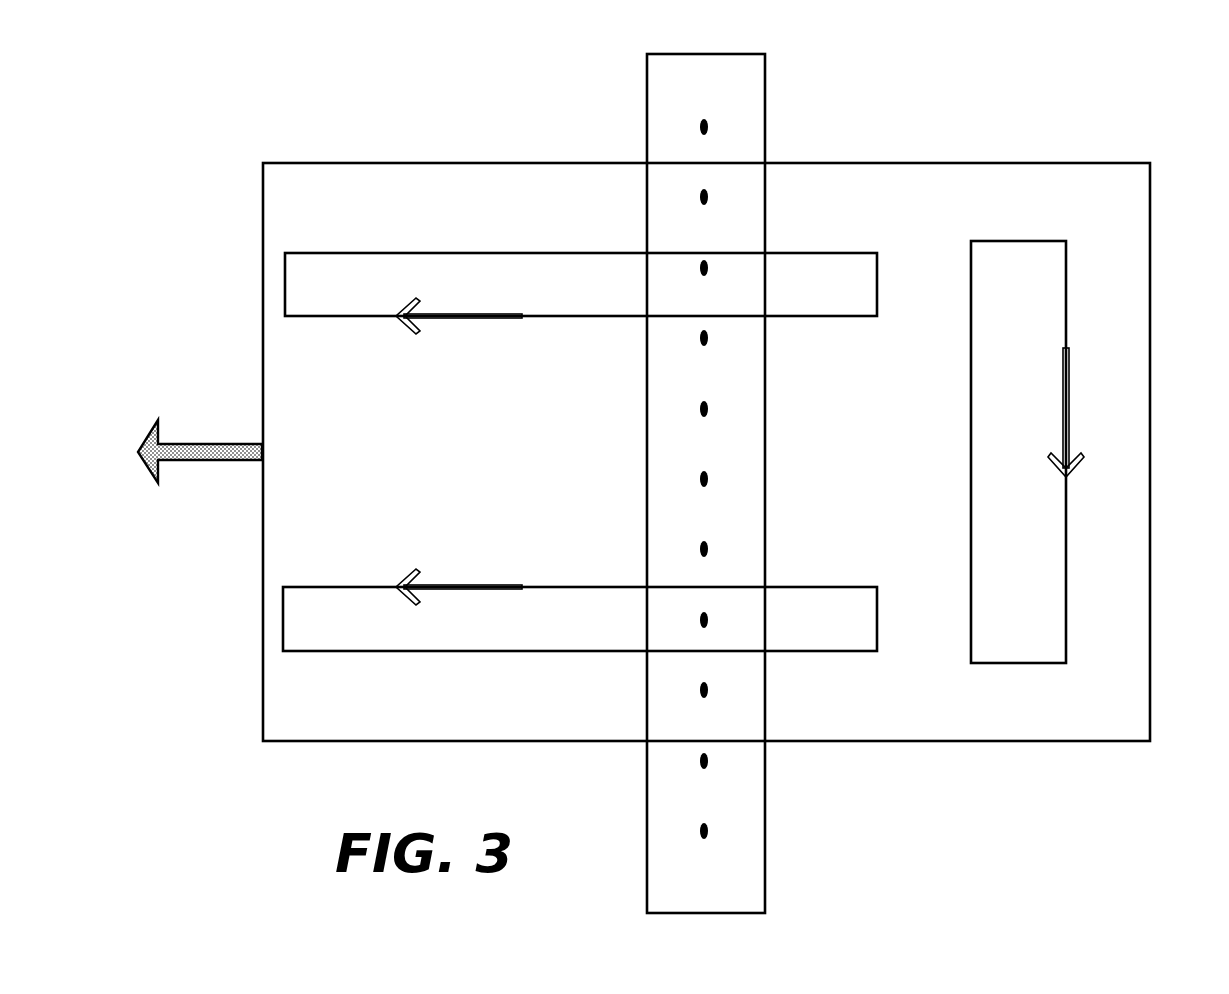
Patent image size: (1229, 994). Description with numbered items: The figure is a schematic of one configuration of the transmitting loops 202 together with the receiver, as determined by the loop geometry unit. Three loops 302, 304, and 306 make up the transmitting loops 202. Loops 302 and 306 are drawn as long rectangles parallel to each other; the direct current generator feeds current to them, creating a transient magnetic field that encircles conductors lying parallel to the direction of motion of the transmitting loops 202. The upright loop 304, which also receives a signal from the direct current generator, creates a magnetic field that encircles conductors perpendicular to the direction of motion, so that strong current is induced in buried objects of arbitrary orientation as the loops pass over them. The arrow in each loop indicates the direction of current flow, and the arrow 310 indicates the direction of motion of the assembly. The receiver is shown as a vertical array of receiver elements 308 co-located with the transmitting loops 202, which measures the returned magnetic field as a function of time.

The transmitting loops 202 is at (1150, 497).
The loop 302 is at (357, 253).
The loop 304 is at (1020, 241).
The loop 306 is at (357, 651).
The receiver elements 308 is at (765, 118).
The exit direction arrow 310 is at (160, 420).